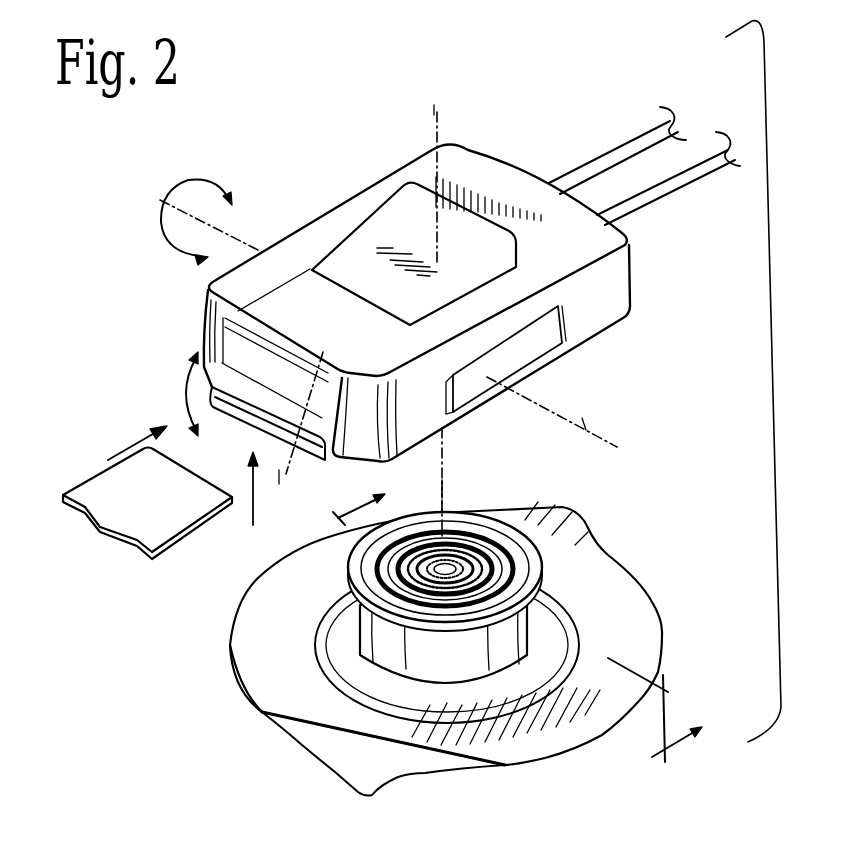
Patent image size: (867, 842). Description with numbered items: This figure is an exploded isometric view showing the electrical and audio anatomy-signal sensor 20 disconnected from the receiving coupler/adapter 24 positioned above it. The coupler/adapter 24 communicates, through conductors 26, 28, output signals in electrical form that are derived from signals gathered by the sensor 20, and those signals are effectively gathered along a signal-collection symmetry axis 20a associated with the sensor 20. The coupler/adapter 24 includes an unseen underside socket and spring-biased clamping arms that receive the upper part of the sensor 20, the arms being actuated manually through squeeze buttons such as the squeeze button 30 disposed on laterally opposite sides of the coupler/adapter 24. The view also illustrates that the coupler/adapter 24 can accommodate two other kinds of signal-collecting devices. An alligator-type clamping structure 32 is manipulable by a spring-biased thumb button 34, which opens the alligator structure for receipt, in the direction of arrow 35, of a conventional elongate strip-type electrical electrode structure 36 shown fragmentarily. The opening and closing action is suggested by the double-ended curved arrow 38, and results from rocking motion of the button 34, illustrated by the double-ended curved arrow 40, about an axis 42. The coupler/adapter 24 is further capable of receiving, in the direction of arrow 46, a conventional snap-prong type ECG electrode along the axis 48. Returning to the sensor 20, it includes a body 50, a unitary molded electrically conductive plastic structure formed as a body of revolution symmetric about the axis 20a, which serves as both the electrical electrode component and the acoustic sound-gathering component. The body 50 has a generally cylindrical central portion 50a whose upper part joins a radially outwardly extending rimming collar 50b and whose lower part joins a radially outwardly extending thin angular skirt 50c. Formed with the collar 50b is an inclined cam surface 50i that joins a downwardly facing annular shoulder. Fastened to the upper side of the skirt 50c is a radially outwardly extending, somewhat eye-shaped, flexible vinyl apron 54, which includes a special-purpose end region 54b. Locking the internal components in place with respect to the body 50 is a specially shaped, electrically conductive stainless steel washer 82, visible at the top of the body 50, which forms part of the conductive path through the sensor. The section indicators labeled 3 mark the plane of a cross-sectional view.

The electrical and audio anatomy-signal sensor 20 is at (604, 533).
The signal-collection symmetry axis 20a is at (517, 112).
The coupler/adapter 24 is at (393, 172).
The conductor 26 is at (627, 138).
The conductor 28 is at (687, 183).
The squeeze button 30 is at (540, 348).
The alligator-type clamping structure 32 is at (315, 484).
The spring-biased thumb button 34 is at (393, 217).
The arrow 35 is at (128, 447).
The strip-type electrical electrode structure 36 is at (90, 487).
The double-ended curved arrow 38 is at (183, 397).
The double-ended curved arrow 40 is at (190, 190).
The axis 42 is at (590, 425).
The arrow 46 is at (235, 505).
The axis 48 is at (309, 405).
The body 50 is at (350, 618).
The generally cylindrical central portion 50a is at (530, 622).
The rimming collar 50b is at (578, 491).
The thin angular skirt 50c is at (540, 647).
The inclined cam surface 50i is at (397, 627).
The flexible vinyl apron 54 is at (224, 668).
The special-purpose end region 54b is at (347, 773).
The electrically conductive washer 82 is at (473, 523).
The section line 3- 3 is at (525, 619).